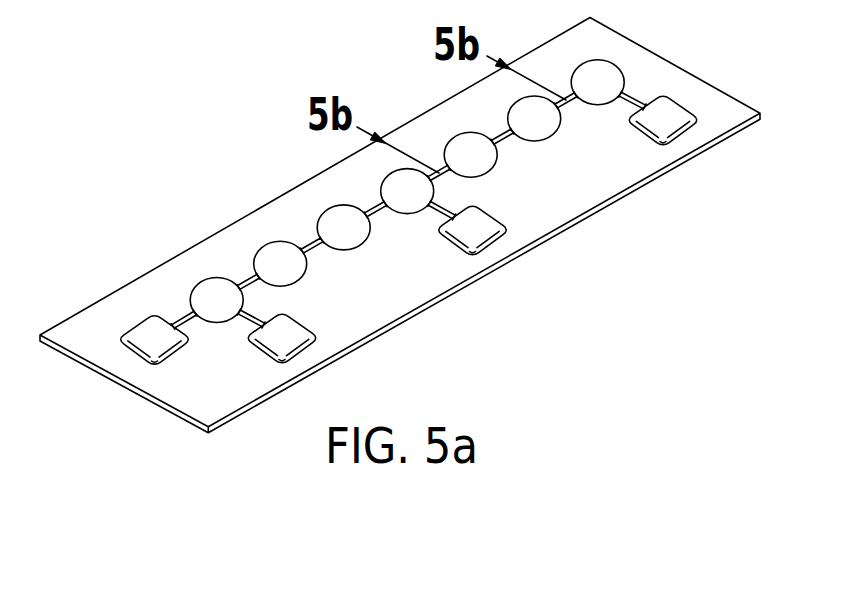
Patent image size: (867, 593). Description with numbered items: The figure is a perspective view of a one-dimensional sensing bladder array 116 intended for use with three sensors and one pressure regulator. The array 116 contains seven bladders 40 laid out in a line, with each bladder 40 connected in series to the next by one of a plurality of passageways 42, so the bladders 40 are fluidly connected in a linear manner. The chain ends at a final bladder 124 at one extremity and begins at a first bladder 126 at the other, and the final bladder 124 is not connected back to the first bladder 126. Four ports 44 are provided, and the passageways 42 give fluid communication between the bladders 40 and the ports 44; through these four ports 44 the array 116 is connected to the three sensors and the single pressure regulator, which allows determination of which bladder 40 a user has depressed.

The one-dimensional sensing bladder array 116 is at (218, 147).
The bladder 40 is at (405, 187).
The passageway 42 is at (382, 216).
The port 44 is at (150, 335).
The final bladder 124 is at (600, 75).
The first bladder 126 is at (217, 295).